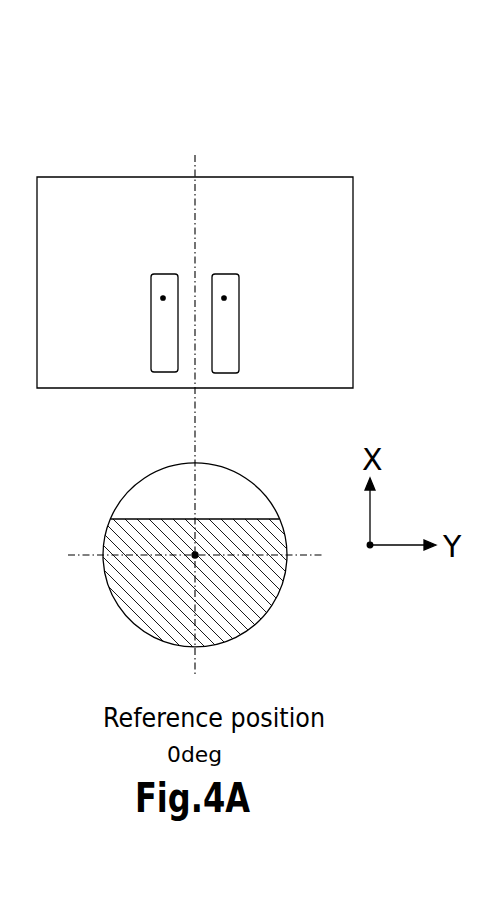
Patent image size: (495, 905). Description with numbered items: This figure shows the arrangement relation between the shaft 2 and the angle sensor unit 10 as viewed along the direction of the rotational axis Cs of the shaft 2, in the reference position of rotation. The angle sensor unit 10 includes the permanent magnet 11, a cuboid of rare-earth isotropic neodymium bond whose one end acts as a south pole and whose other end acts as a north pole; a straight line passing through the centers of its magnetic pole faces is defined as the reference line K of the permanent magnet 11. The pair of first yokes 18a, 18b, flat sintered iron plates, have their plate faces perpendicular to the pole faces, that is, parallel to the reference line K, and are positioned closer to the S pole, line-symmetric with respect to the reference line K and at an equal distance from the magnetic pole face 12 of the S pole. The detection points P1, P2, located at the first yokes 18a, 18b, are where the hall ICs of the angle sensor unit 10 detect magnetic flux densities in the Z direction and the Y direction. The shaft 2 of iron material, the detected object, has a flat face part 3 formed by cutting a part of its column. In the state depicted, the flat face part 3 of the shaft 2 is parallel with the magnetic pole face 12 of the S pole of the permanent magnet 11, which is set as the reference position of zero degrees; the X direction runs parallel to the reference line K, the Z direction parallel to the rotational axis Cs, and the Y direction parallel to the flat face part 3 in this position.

The angle sensor unit 10 is at (195, 253).
The permanent magnet 11 is at (311, 197).
The magnetic pole face of the S pole 12 is at (283, 389).
The first yoke 18a is at (160, 333).
The first yoke 18b is at (224, 333).
The detection point P1 is at (160, 298).
The detection point P2 is at (226, 298).
The reference line K is at (135, 437).
The shaft 2 is at (258, 603).
The flat face part 3 is at (263, 504).
The rotational axis Cs is at (194, 556).